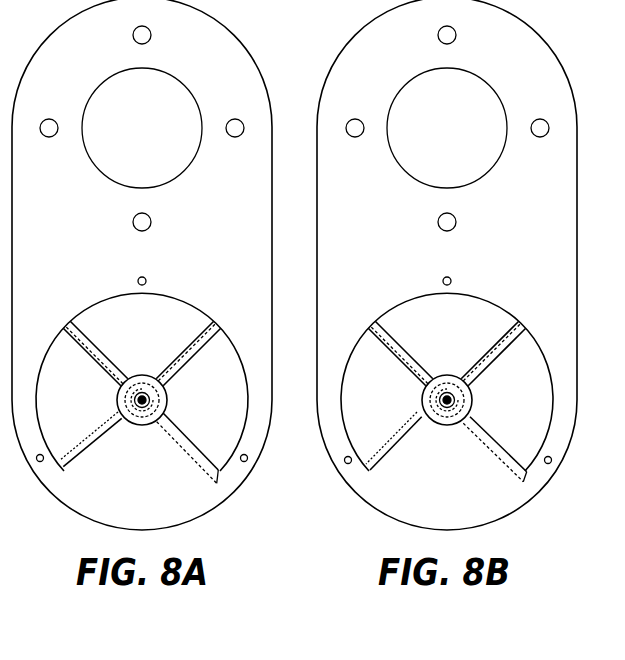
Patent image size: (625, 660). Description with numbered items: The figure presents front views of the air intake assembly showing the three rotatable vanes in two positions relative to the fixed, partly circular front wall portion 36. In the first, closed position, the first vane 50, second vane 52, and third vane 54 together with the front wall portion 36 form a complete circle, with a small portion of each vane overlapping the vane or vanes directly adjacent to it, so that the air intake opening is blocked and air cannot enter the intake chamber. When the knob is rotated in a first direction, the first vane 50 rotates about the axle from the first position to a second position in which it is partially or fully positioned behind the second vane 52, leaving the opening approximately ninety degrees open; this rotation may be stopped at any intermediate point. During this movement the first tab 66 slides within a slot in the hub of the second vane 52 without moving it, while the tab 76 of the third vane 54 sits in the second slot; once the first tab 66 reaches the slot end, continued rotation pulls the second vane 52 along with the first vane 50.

In FIG. 8A, the partly circular front wall portion 36 is at (148, 480).
In FIG. 8B, the partly circular front wall portion 36 is at (417, 484).
In FIG. 8A, the first rotatable vane 50 is at (83, 411).
In FIG. 8B, the first rotatable vane 50 is at (394, 441).
In FIG. 8A, the second rotatable vane 52 is at (154, 347).
In FIG. 8B, the second rotatable vane 52 is at (432, 343).
In FIG. 8A, the third rotatable vane 54 is at (230, 411).
In FIG. 8B, the third rotatable vane 54 is at (512, 400).
In FIG. 8A, the first tab 66 is at (143, 418).
In FIG. 8B, the first tab 66 is at (422, 405).
In FIG. 8A, the tab of the third rotatable vane 76 is at (165, 392).
In FIG. 8B, the tab of the third rotatable vane 76 is at (467, 399).